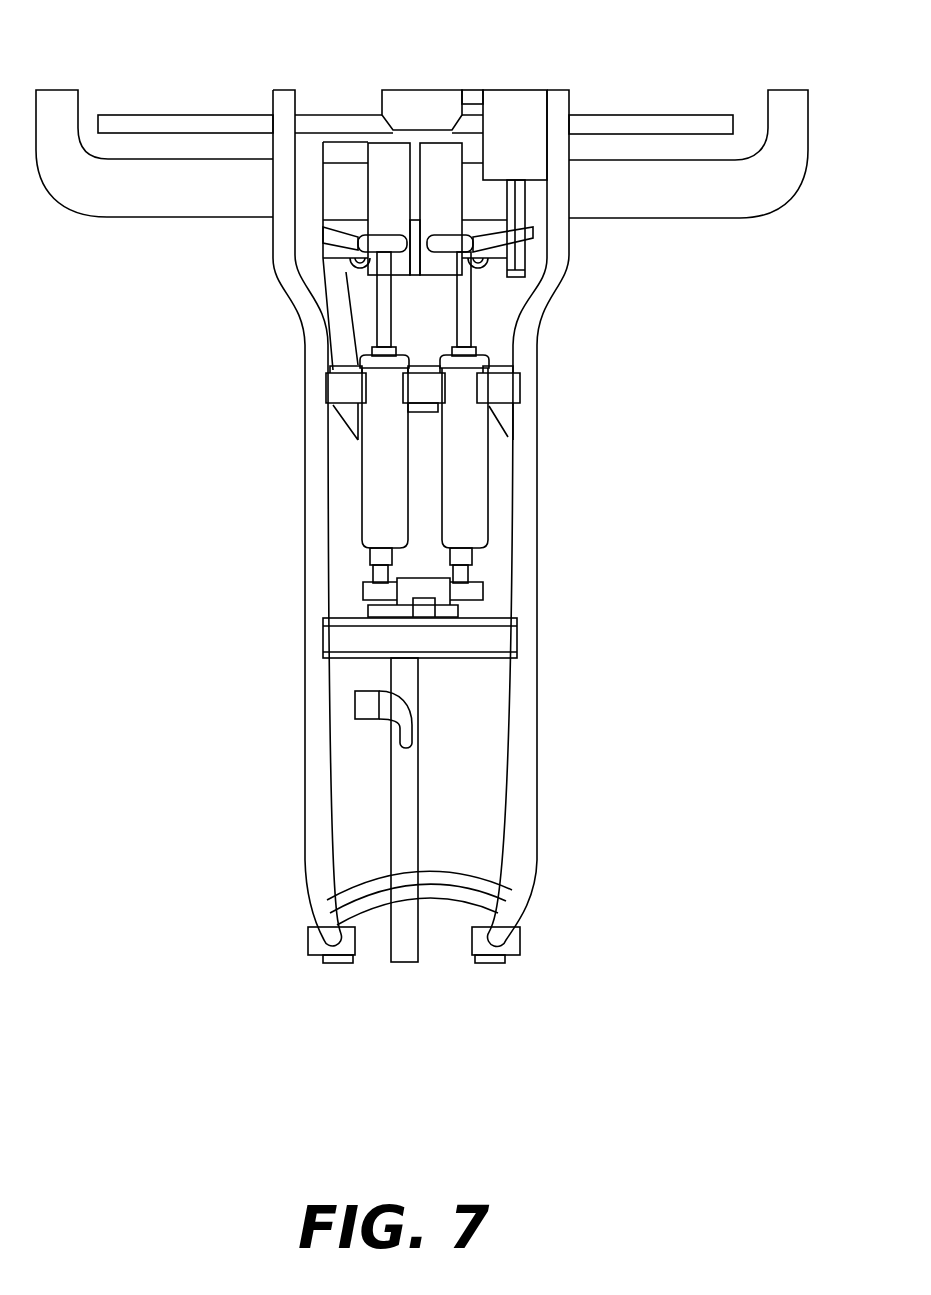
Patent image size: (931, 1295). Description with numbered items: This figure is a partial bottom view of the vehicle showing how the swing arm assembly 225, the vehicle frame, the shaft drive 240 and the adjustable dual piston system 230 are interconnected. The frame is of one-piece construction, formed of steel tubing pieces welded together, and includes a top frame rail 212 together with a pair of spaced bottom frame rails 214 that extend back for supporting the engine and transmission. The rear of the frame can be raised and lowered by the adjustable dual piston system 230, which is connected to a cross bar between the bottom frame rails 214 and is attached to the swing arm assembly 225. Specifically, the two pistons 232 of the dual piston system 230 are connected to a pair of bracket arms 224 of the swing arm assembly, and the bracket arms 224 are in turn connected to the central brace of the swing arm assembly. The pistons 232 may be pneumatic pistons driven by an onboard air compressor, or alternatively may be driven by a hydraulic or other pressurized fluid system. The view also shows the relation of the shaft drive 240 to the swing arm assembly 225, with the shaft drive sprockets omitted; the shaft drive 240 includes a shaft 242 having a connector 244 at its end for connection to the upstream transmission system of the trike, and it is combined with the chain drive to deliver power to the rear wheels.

The top frame rail 212 is at (418, 803).
The bottom frame rails 214 is at (304, 710).
The bracket arms 224 is at (312, 270).
The swing arm assembly 225 is at (777, 203).
The adjustable dual piston system 230 is at (360, 500).
The pistons 232 is at (466, 328).
The shaft drive 240 is at (513, 104).
The shaft 242 is at (530, 217).
The connector 244 is at (508, 278).